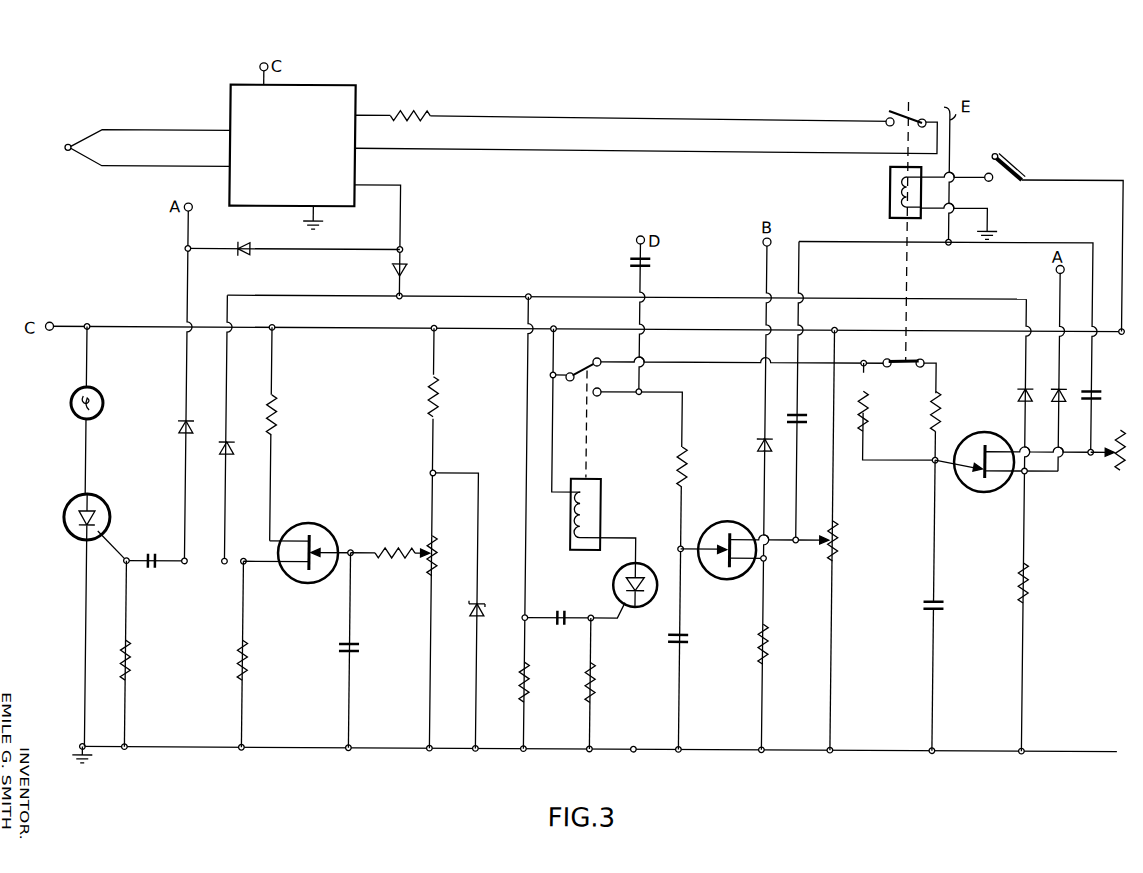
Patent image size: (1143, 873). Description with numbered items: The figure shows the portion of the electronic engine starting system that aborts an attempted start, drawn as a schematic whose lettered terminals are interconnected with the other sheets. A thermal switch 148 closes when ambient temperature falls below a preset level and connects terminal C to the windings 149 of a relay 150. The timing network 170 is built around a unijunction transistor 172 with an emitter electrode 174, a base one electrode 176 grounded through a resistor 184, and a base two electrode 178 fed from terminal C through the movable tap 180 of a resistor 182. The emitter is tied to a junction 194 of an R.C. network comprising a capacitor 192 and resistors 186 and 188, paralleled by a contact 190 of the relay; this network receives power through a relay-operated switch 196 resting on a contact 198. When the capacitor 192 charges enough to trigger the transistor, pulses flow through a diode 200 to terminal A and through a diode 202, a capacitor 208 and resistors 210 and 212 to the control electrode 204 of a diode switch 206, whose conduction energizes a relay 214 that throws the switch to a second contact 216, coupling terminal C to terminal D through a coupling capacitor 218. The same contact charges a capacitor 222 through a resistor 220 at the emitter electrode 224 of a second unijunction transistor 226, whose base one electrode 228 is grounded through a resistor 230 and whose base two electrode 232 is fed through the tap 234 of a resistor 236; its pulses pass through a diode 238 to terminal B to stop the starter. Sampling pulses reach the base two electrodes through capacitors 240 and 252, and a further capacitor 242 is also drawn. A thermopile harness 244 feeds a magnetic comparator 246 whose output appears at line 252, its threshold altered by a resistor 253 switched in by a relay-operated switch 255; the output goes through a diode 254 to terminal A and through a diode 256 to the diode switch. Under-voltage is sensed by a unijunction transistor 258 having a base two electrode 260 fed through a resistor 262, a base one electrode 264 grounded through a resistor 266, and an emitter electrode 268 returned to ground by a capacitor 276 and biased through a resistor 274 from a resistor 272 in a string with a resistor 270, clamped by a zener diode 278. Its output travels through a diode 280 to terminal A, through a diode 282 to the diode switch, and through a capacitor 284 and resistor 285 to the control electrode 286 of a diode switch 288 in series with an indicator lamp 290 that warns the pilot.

The thermal switch 148 is at (1007, 170).
The windings 149 is at (891, 182).
The relay 150 is at (889, 205).
The timing network 170 is at (989, 711).
The unijunction transistor 172 is at (966, 442).
The emitter electrode 174 is at (964, 485).
The base one electrode 176 is at (986, 489).
The base two electrode 178 is at (989, 442).
The movable tap 180 is at (1105, 454).
The resistor 182 is at (1118, 467).
The resistor 184 is at (1030, 584).
The resistor 186 is at (867, 424).
The resistor 188 is at (937, 412).
The contact 190 is at (908, 361).
The capacitor 192 is at (930, 612).
The junction 194 is at (933, 464).
The relay-operated switch 196 is at (577, 370).
The contact 198 is at (608, 352).
The diode 200 is at (1055, 384).
The diode 202 is at (1024, 384).
The control electrode 204 is at (618, 600).
The diode switch 206 is at (616, 575).
The capacitor 208 is at (558, 610).
The resistor 210 is at (531, 669).
The resistor 212 is at (591, 679).
The relay 214 is at (603, 503).
The second contact 216 is at (599, 395).
The coupling capacitor 218 is at (648, 265).
The resistor 220 is at (686, 468).
The capacitor 222 is at (688, 651).
The emitter electrode 224 is at (714, 572).
The unijunction transistor 226 is at (705, 531).
The base one electrode 228 is at (740, 576).
The resistor 230 is at (771, 644).
The base two electrode 232 is at (735, 522).
The movable tap 234 is at (801, 543).
The resistor 236 is at (837, 545).
The diode 238 is at (761, 442).
The capacitor 240 is at (1088, 388).
The capacitor 242 is at (801, 412).
The thermopile harness 244 is at (68, 146).
The magnetic comparator 246 is at (308, 184).
The line 252 is at (399, 228).
The resistor 253 is at (395, 112).
The diode 254 is at (248, 245).
The relay-operated switch 255 is at (880, 112).
The diode 256 is at (408, 270).
The unijunction transistor 258 is at (320, 530).
The base two electrode 260 is at (282, 535).
The resistor 262 is at (276, 431).
The base one electrode 264 is at (282, 574).
The resistor 266 is at (250, 669).
The emitter electrode 268 is at (323, 555).
The resistor 270 is at (428, 407).
The resistor 272 is at (442, 547).
The resistor 274 is at (401, 561).
The capacitor 276 is at (358, 645).
The zener diode 278 is at (484, 619).
The diode 280 is at (180, 424).
The diode 282 is at (231, 443).
The capacitor 284 is at (147, 556).
The resistor 285 is at (134, 673).
The control electrode 286 is at (103, 527).
The diode switch 288 is at (66, 511).
The indicator lamp 290 is at (68, 405).